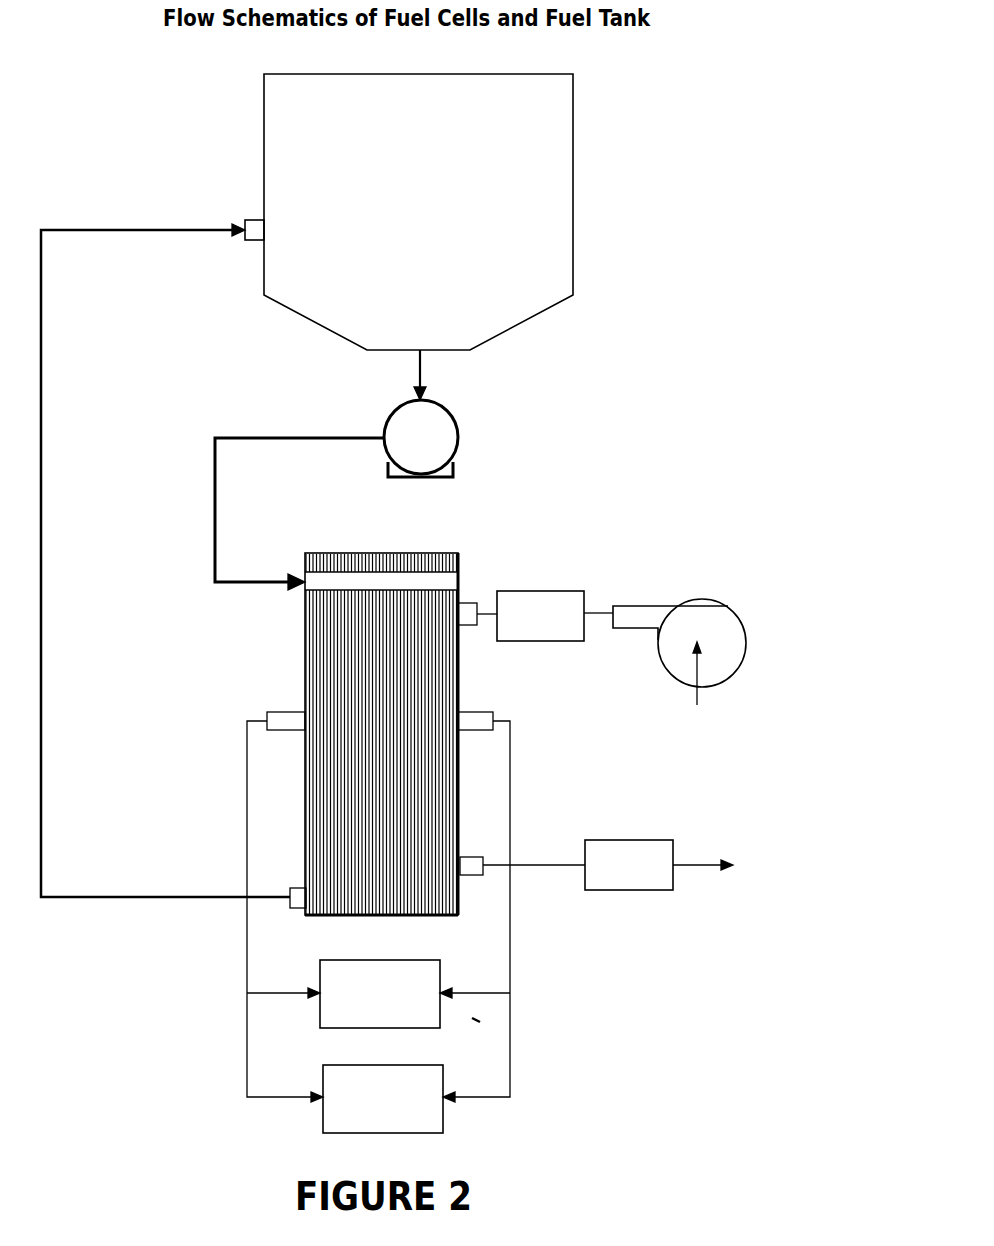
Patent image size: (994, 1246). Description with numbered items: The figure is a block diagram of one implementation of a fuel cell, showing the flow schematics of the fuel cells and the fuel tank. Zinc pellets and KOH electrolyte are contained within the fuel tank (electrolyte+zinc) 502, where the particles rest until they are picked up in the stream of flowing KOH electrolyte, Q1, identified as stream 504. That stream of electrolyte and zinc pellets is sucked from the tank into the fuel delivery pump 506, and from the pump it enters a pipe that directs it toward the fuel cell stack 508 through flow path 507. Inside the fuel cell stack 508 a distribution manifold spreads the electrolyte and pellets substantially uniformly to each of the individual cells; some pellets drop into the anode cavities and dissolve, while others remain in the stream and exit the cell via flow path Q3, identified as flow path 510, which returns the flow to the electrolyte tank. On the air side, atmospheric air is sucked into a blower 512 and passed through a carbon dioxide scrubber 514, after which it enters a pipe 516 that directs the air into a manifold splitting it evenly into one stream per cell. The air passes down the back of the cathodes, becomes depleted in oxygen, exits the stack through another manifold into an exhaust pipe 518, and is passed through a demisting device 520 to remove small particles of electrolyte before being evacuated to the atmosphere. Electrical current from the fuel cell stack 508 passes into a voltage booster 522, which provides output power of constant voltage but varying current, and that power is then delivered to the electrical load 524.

The fuel tank (electrolyte+zinc) 502 is at (558, 150).
The stream of flowing KOH electrolyte Q1 504 is at (427, 370).
The fuel delivery pump 506 is at (440, 430).
The flow path 507 is at (215, 515).
The fuel cell stack 508 is at (460, 558).
The flow path Q3 510 is at (57, 540).
The blower 512 is at (728, 632).
The carbon dioxide scrubber 514 is at (573, 596).
The pipe 516 is at (483, 612).
The exhaust pipe 518 is at (542, 858).
The demisting device 520 is at (660, 852).
The voltage booster 522 is at (427, 977).
The electrical load 524 is at (428, 1093).